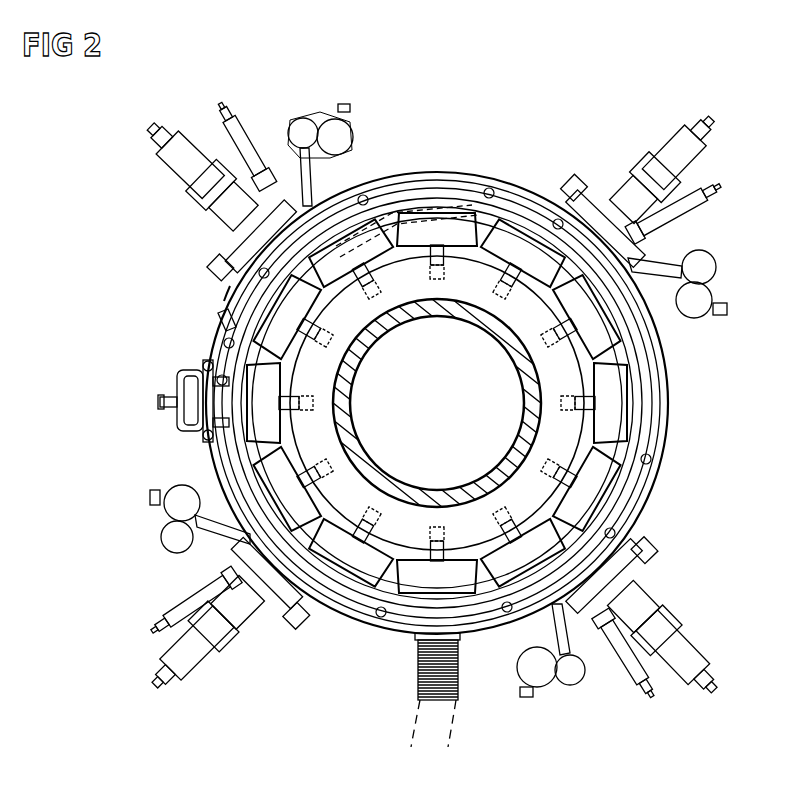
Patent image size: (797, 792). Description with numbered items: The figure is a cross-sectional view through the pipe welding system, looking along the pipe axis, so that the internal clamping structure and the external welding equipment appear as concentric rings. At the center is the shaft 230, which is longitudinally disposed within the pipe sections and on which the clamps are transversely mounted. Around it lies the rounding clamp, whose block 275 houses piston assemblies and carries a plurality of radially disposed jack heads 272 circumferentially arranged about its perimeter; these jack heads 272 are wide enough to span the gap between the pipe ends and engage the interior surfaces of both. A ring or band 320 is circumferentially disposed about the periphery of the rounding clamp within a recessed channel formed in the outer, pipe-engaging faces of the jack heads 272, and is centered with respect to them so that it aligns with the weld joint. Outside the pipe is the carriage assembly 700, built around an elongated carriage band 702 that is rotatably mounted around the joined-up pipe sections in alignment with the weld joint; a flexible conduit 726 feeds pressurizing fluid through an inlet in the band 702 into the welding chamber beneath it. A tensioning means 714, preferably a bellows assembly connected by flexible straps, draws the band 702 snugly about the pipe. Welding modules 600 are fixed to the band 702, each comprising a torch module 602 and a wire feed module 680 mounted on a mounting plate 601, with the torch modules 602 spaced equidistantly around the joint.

The welding module 600 is at (172, 212).
The mounting plate 601 is at (226, 318).
The torch module 602 is at (190, 140).
The wire feed module 680 is at (305, 120).
The band 320 is at (418, 205).
The jack head 272 is at (505, 228).
The block 275 is at (578, 441).
The shaft 230 is at (521, 444).
The carriage assembly 700 is at (670, 392).
The carriage band 702 is at (213, 350).
The tensioning means 714 is at (172, 360).
The flexible conduit 726 is at (420, 685).